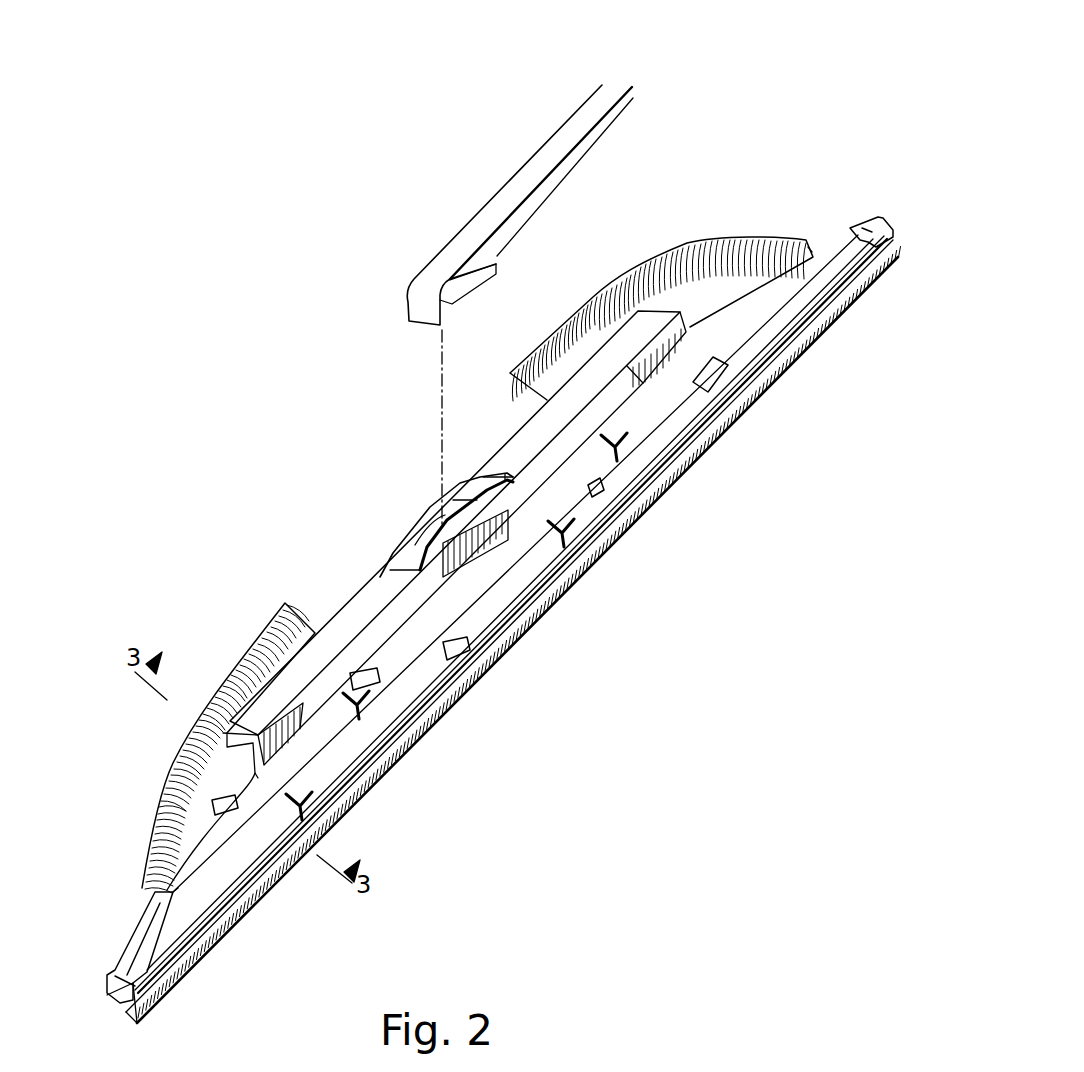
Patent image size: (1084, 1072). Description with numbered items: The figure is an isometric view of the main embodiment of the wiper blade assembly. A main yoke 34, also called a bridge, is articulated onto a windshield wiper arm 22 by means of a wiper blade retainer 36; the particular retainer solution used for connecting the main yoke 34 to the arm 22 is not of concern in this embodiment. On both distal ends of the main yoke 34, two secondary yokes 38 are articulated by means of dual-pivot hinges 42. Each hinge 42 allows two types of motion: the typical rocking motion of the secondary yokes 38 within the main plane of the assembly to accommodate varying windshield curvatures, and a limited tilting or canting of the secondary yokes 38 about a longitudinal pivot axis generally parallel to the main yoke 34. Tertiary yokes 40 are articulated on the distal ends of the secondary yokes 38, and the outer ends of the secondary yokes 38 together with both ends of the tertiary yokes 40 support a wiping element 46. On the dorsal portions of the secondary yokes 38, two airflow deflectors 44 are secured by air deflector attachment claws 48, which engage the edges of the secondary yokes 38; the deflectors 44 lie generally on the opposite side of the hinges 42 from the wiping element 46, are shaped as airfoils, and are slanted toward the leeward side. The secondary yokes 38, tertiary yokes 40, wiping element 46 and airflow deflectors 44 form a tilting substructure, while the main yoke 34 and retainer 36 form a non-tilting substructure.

The windshield wiper arm 22 is at (592, 123).
The main yoke 34 is at (400, 610).
The wiper blade retainer 36 is at (430, 532).
The secondary yoke 38 is at (135, 938).
The tertiary yoke 40 is at (593, 477).
The dual-pivot hinge 42 is at (690, 350).
The airflow deflector 44 is at (175, 765).
The wiping element 46 is at (227, 925).
The air deflector attachment claw 48 is at (153, 880).